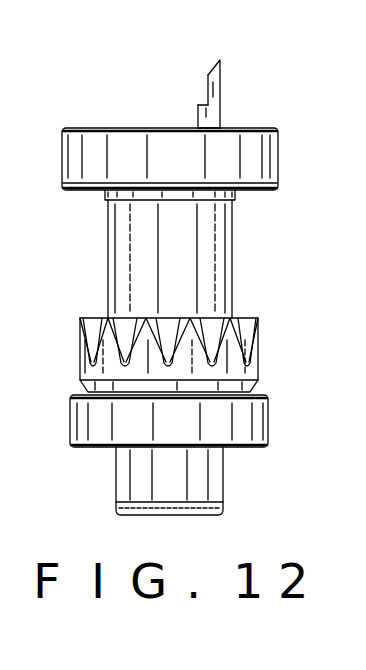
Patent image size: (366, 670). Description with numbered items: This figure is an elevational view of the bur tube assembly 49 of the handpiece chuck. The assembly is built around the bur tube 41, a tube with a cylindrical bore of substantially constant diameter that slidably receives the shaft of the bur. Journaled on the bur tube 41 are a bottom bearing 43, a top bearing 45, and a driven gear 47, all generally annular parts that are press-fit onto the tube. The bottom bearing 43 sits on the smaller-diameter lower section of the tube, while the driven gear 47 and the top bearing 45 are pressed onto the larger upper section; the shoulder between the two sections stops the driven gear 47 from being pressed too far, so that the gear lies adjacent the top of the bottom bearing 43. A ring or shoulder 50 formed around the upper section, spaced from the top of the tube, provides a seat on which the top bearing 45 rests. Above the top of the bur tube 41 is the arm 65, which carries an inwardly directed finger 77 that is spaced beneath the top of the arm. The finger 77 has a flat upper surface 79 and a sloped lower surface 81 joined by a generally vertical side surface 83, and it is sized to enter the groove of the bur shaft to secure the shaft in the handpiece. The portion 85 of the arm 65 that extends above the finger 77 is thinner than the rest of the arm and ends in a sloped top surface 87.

The bur tube 41 is at (232, 265).
The bottom bearing 43 is at (270, 417).
The top bearing 45 is at (278, 152).
The driven gear 47 is at (260, 343).
The bur tube assembly 49 is at (86, 221).
The ring or shoulder 50 is at (235, 195).
The arm 65 is at (230, 81).
The finger 77 is at (170, 98).
The flat upper surface 79 is at (199, 106).
The sloped lower surface 81 is at (196, 122).
The side surface 83 is at (193, 105).
The portion of the arm 85 is at (202, 105).
The sloped top surface 87 is at (209, 72).